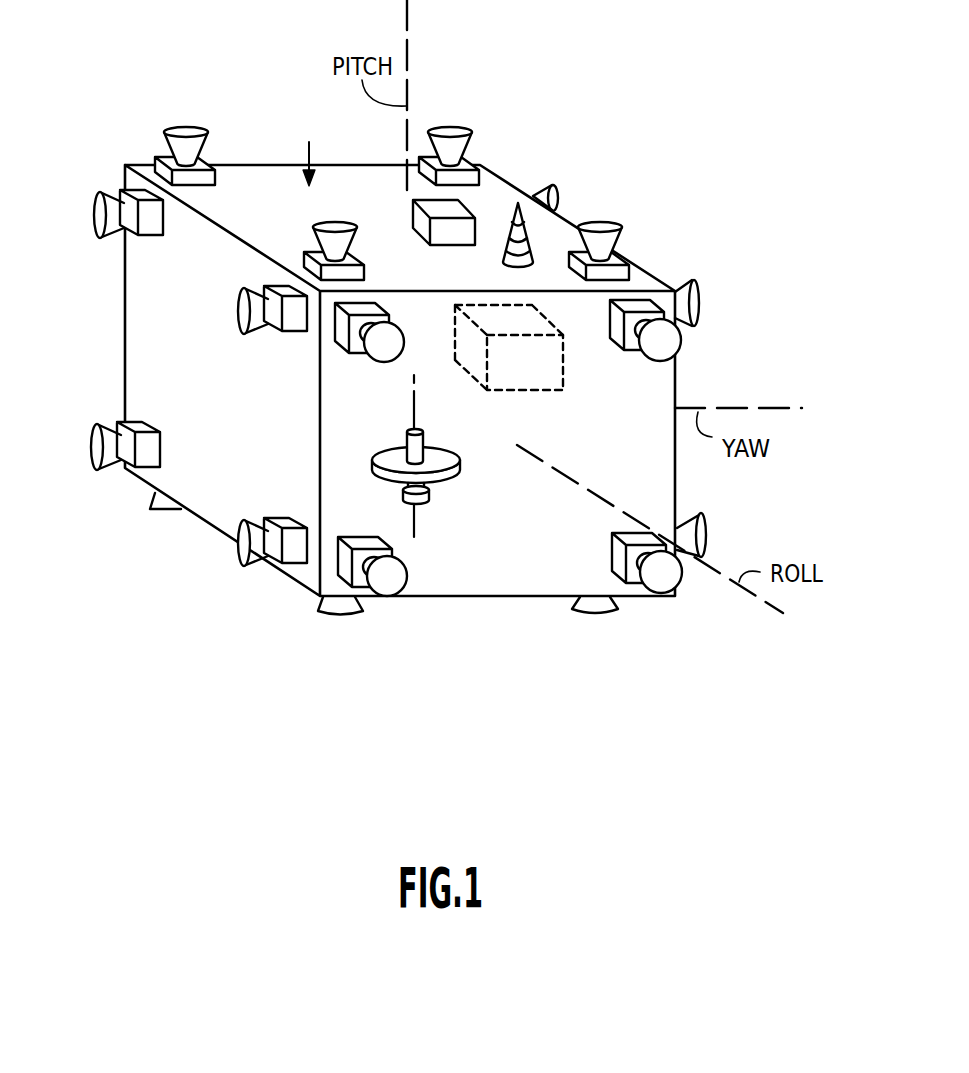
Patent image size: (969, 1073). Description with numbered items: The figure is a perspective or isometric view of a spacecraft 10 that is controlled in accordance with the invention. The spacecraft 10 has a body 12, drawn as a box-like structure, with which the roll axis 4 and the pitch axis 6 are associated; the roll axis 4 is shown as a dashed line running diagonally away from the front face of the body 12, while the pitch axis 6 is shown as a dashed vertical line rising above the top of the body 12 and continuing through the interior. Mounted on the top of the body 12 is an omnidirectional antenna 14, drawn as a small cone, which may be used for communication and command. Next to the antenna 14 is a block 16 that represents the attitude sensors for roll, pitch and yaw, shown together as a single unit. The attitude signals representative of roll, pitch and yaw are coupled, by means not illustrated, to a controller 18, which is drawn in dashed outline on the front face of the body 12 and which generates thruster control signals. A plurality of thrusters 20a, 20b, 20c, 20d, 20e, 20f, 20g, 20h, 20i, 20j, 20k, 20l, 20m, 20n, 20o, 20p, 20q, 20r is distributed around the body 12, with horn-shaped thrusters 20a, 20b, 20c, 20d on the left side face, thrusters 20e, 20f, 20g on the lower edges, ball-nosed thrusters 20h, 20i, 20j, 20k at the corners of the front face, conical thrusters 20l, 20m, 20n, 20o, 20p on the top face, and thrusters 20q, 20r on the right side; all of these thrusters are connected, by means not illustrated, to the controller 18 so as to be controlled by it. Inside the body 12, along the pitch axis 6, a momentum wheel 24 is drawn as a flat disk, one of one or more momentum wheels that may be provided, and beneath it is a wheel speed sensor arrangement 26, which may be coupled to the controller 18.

The roll axis 4 is at (776, 604).
The pitch axis 6 is at (438, 396).
The spacecraft 10 is at (247, 97).
The body 12 is at (307, 150).
The omnidirectional antenna 14 is at (518, 202).
The attitude sensors 16 is at (457, 245).
The controller 18 is at (537, 392).
The momentum wheel 24 is at (443, 452).
The wheel speed sensor arrangement 26 is at (423, 503).
The thruster 20a is at (97, 222).
The thruster 20b is at (97, 443).
The thruster 20c is at (265, 325).
The thruster 20d is at (245, 557).
The thruster 20e is at (163, 513).
The thruster 20f is at (333, 615).
The thruster 20g is at (592, 614).
The thruster 20h is at (407, 582).
The thruster 20i is at (390, 363).
The thruster 20j is at (672, 353).
The thruster 20k is at (662, 597).
The thruster 20l is at (181, 127).
The thruster 20m is at (457, 122).
The thruster 20n is at (615, 246).
The thruster 20o is at (330, 220).
The thruster 20p is at (551, 192).
The thruster 20q is at (700, 280).
The thruster 20r is at (703, 530).